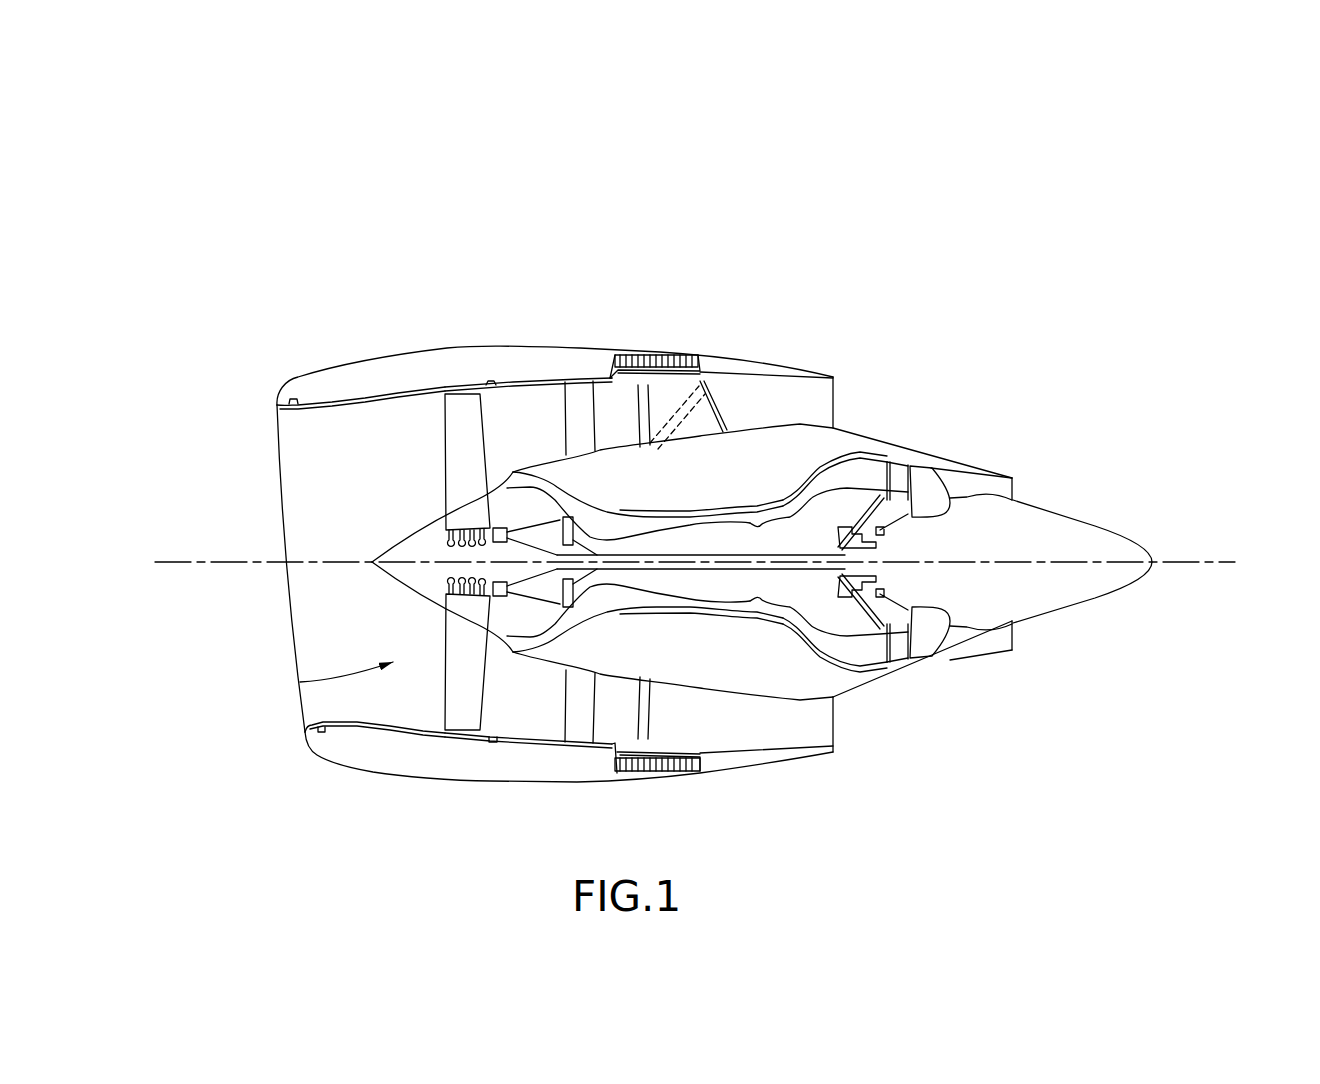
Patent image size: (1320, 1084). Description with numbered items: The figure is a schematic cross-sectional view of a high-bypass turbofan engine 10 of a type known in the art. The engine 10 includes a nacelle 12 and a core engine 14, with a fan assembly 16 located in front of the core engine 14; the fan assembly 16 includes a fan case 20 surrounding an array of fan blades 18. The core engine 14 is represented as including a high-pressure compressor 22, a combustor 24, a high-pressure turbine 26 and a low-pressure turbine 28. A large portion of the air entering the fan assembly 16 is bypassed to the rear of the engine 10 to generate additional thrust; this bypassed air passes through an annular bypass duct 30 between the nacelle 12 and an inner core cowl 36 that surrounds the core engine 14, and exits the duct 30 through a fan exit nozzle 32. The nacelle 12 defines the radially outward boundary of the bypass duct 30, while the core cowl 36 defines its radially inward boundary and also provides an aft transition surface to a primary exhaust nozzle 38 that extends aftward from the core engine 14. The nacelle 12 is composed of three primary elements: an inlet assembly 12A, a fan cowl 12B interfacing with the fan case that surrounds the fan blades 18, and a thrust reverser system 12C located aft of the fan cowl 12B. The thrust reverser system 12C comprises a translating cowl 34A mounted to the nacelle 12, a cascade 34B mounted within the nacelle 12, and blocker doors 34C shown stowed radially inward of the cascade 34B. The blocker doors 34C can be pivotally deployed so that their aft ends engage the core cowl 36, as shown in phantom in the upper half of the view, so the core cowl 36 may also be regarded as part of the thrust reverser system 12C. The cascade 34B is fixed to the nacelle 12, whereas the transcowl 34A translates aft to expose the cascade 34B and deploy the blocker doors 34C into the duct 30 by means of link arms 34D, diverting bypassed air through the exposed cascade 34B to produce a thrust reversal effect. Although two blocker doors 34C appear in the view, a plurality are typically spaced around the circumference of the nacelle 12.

The high-bypass turbofan engine 10 is at (892, 283).
The nacelle 12 is at (458, 328).
The inlet assembly 12A is at (372, 355).
The fan cowl 12B is at (532, 347).
The thrust reverser system 12C is at (628, 333).
The core engine 14 is at (860, 672).
The fan assembly 16 is at (300, 682).
The fan blades 18 is at (453, 445).
The fan case 20 is at (370, 398).
The high-pressure compressor 22 is at (612, 527).
The combustor 24 is at (753, 518).
The high-pressure turbine 26 is at (790, 615).
The low-pressure turbine 28 is at (863, 478).
The bypass duct 30 is at (541, 441).
The fan exit nozzle 32 is at (850, 393).
The translating cowl 34A is at (760, 358).
The cascade 34B is at (687, 360).
The blocker doors 34C is at (648, 378).
The link arms 34D is at (683, 422).
The core cowl 36 is at (750, 427).
The primary exhaust nozzle 38 is at (963, 462).